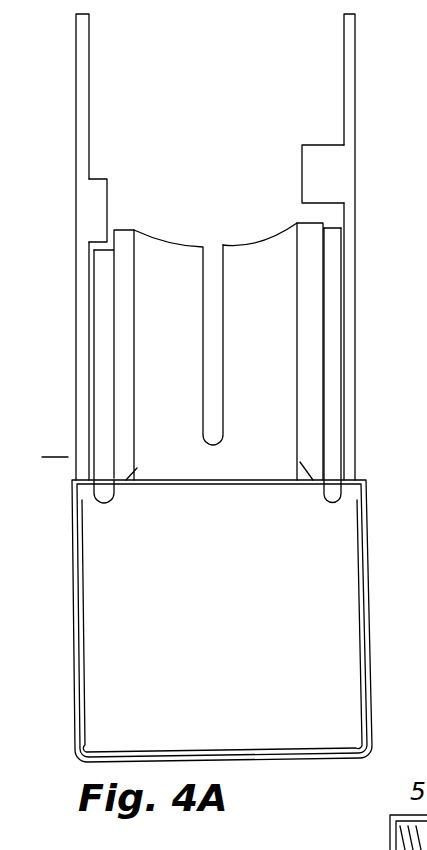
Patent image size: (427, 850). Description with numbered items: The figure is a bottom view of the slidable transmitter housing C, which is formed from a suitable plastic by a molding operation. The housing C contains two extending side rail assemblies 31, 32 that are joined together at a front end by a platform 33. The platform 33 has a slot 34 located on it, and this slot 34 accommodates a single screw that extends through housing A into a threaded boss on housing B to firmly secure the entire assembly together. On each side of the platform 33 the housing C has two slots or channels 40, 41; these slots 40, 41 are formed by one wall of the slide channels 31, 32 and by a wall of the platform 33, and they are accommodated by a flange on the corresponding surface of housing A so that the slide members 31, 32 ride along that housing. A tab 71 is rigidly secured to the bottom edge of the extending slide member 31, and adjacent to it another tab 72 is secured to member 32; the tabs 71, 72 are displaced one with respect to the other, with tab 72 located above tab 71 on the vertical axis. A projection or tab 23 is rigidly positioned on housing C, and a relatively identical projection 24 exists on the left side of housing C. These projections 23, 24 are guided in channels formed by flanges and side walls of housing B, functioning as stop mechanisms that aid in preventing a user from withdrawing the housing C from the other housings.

The side rail assembly 31 is at (88, 53).
The side rail assembly 32 is at (343, 42).
The tab 71 is at (99, 203).
The tab 72 is at (303, 163).
The platform 33 is at (257, 262).
The slot 34 is at (205, 273).
The slot 40 is at (100, 351).
The slot 41 is at (356, 334).
The projection 23 is at (106, 502).
The projection 24 is at (335, 501).
The transmitter housing C is at (207, 596).